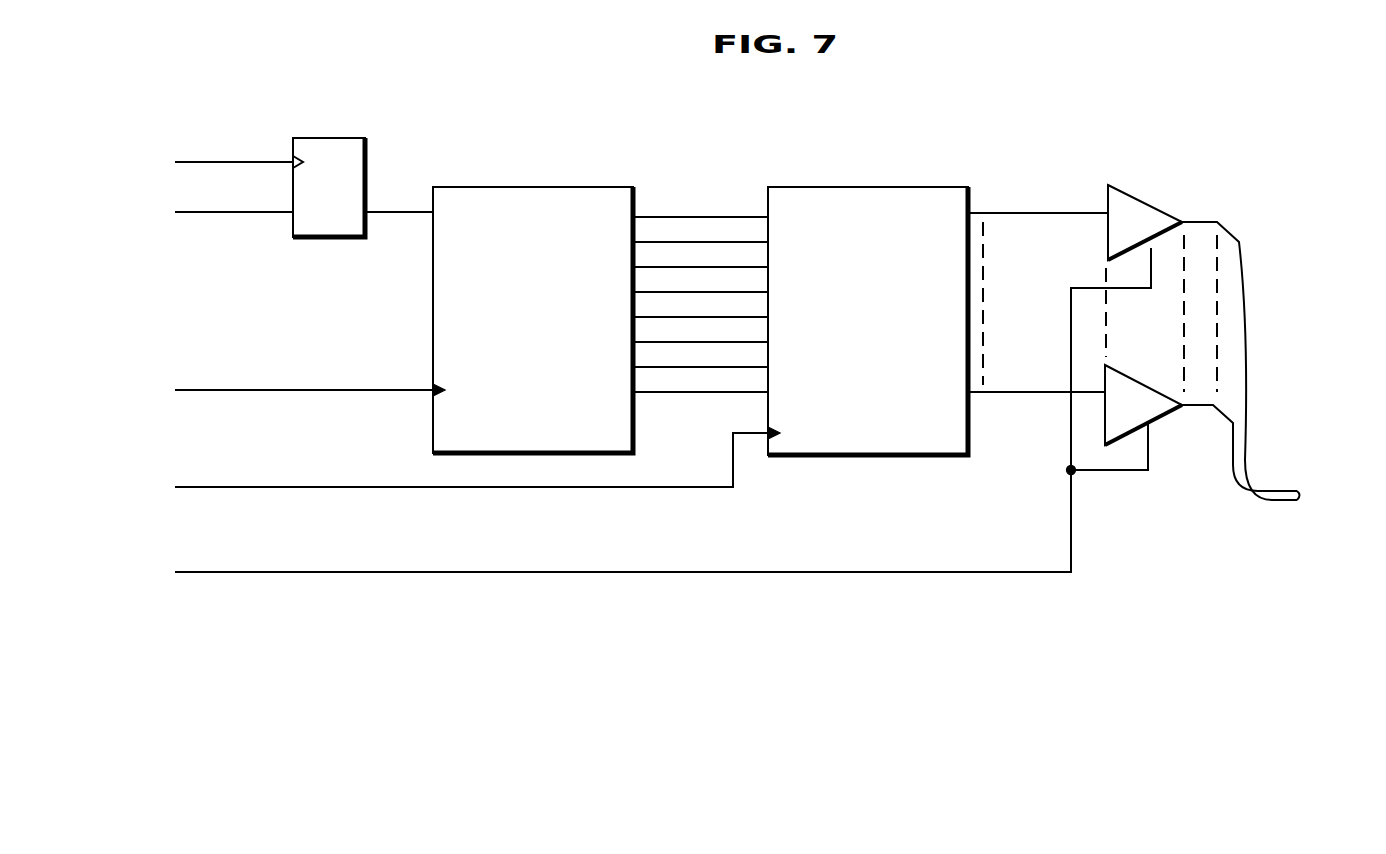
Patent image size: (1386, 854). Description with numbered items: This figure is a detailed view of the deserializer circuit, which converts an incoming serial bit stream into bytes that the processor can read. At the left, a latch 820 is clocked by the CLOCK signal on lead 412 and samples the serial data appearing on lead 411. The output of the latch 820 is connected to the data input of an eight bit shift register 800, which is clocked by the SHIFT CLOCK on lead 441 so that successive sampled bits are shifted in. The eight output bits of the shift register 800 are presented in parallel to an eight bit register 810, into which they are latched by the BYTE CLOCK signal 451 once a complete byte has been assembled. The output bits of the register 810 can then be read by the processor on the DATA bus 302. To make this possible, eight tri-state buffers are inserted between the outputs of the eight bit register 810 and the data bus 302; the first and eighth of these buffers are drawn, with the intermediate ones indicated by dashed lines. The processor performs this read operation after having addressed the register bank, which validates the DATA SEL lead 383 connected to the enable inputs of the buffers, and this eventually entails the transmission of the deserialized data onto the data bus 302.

The latch 820 is at (332, 138).
The CLOCK lead 412 is at (263, 162).
The serial data lead 411 is at (280, 212).
The 8 bit shift register 800 is at (592, 186).
The 8 bit register 810 is at (913, 190).
The SHIFT CLOCK lead 441 is at (425, 388).
The BYTE CLOCK signal 451 is at (430, 490).
The DATA SEL lead 383 is at (395, 575).
The DATA bus 302 is at (1285, 491).